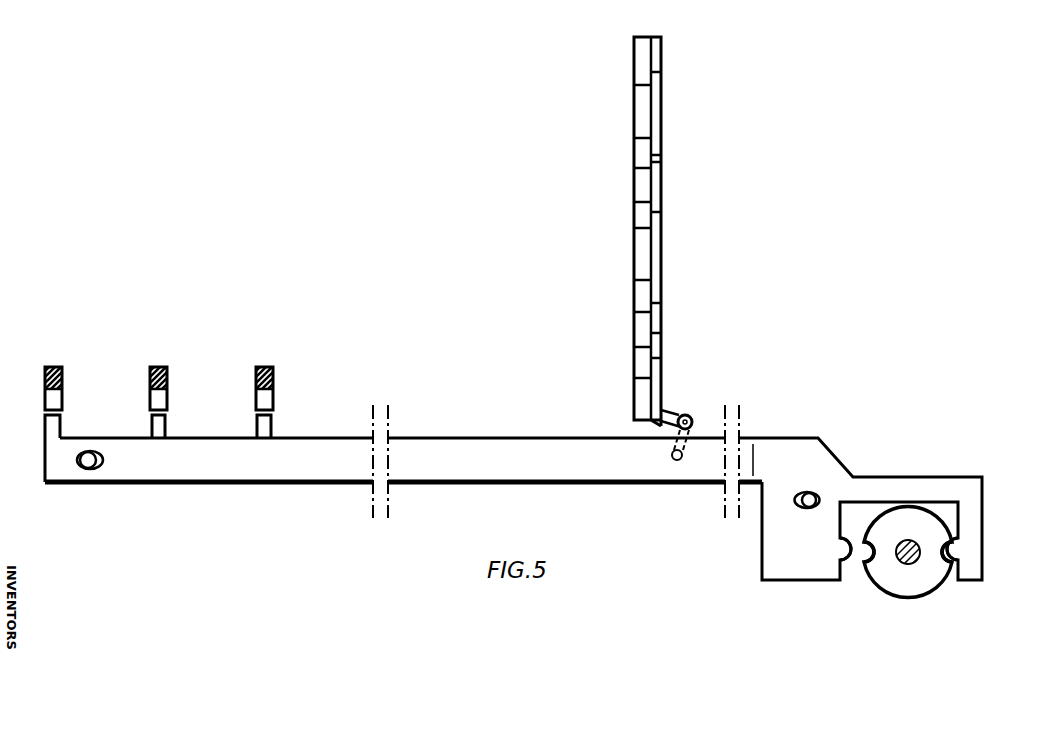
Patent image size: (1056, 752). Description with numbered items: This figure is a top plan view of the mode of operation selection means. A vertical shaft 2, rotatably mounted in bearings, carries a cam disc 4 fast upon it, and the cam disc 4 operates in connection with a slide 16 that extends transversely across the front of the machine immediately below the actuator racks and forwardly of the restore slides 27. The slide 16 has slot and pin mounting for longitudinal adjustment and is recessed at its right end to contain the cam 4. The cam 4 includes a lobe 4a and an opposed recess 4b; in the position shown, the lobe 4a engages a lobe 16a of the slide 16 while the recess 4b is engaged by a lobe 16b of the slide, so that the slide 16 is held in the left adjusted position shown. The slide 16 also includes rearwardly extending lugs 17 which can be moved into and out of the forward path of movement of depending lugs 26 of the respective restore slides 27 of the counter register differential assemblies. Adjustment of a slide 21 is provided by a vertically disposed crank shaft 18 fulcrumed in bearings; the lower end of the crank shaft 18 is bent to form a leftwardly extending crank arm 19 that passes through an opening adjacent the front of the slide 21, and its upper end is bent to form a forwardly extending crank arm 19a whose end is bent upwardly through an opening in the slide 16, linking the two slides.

The vertical shaft 2 is at (903, 540).
The cam disc 4 is at (920, 520).
The lobe 4a is at (858, 555).
The recess 4b is at (958, 539).
The slide 16 is at (515, 457).
The lobe 16a is at (843, 557).
The lobe 16b is at (955, 552).
The rearwardly extending lugs 17 is at (272, 418).
The crank shaft 18 is at (689, 417).
The crank arm 19 is at (678, 413).
The crank arm 19a is at (672, 437).
The slide 21 is at (652, 390).
The depending lugs 26 is at (270, 392).
The restore slides 27 is at (272, 373).